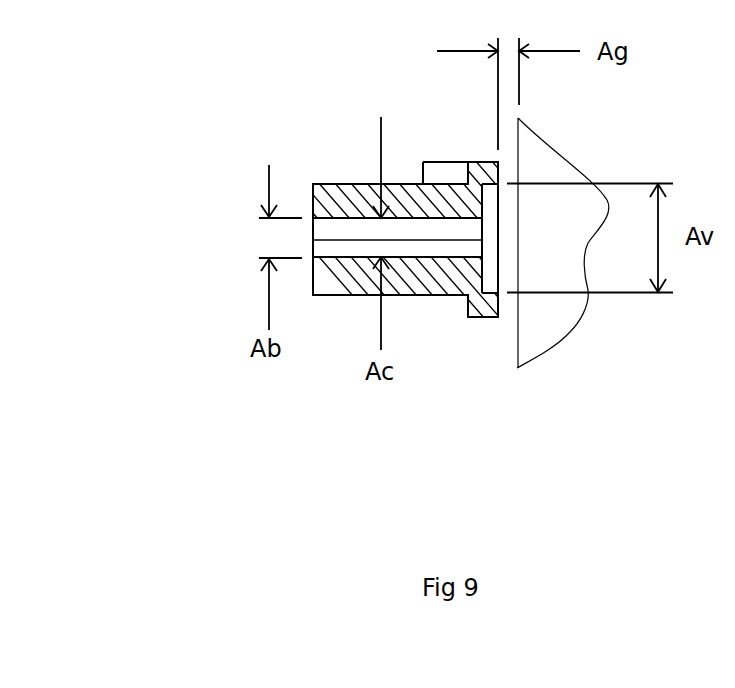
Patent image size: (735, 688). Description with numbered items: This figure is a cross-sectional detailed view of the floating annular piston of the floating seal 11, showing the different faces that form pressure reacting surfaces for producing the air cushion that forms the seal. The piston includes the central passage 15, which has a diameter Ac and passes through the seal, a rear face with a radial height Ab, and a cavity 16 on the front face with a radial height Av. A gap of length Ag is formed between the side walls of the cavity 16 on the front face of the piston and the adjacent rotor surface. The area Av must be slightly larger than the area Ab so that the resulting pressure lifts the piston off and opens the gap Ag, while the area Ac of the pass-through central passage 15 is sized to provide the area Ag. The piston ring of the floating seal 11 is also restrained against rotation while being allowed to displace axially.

The floating seal piston 11 is at (352, 198).
The central passage 15 is at (330, 230).
The cavity 16 is at (488, 220).